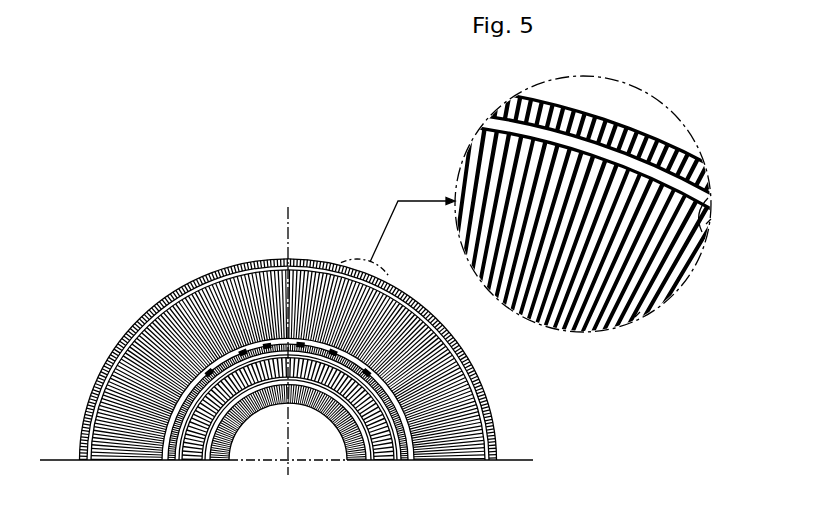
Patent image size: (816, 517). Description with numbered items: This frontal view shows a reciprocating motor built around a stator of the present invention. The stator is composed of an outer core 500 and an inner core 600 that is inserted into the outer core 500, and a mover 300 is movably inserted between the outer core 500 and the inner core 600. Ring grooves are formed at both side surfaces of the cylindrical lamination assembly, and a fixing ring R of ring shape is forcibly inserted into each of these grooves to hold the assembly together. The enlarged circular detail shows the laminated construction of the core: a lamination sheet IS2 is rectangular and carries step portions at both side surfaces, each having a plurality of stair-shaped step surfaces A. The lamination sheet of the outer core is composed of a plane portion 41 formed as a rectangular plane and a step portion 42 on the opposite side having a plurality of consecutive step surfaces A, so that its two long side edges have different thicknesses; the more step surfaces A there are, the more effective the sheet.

The outer core 500 is at (130, 294).
The mover 300 is at (146, 342).
The inner core 600 is at (267, 342).
The fixing ring R is at (103, 376).
The lamination sheet IS2 is at (641, 105).
The plane portion 41 is at (707, 197).
The step surfaces A is at (711, 219).
The step portion 42 is at (782, 247).